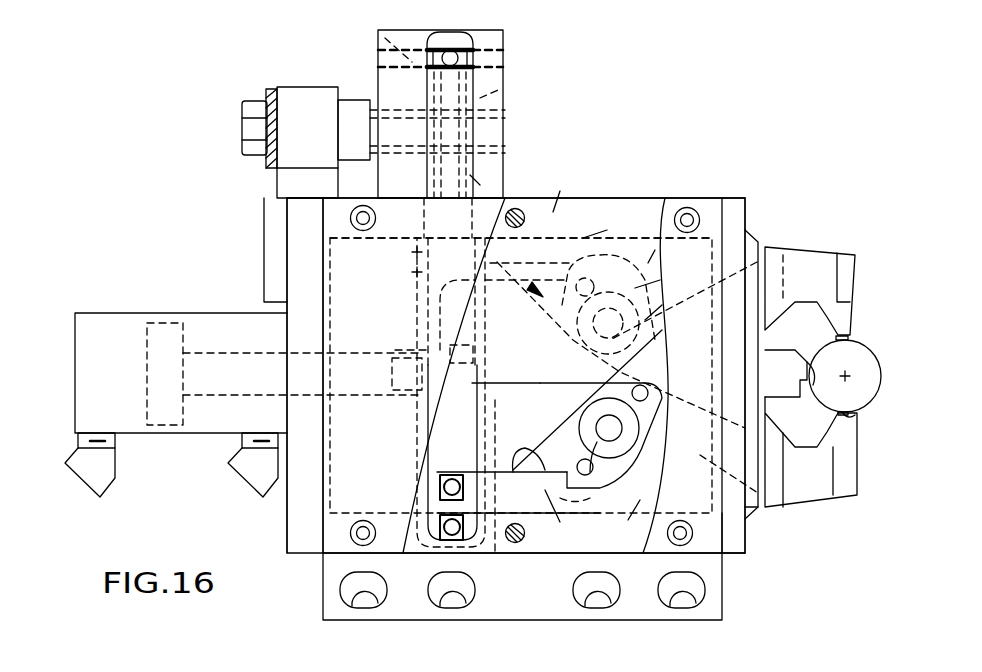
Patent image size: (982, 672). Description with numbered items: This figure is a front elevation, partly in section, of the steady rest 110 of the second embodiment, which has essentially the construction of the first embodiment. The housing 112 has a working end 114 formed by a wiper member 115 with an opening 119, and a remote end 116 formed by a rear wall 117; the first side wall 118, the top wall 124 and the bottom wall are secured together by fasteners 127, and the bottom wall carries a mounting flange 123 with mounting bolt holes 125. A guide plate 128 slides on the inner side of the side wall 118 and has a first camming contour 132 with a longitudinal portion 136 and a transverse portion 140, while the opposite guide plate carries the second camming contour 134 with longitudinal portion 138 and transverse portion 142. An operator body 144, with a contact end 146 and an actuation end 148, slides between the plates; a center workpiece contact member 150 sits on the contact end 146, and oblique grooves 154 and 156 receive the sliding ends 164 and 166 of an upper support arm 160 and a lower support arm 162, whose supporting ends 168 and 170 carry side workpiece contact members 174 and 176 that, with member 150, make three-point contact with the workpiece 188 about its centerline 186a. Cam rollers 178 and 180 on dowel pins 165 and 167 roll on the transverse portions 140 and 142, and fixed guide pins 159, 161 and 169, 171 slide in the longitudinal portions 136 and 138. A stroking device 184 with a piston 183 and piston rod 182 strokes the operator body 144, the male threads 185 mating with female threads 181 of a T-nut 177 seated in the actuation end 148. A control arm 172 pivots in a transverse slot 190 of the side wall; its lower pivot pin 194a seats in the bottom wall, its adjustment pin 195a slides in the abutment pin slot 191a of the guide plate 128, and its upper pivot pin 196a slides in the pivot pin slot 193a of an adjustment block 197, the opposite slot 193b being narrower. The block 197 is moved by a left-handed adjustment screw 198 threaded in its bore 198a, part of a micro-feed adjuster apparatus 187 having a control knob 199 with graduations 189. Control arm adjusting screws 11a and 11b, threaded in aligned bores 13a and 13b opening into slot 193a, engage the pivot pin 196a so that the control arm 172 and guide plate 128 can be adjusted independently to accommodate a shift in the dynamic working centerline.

The steady rest 110 is at (158, 197).
The control arm adjusting screw 11a is at (496, 31).
The control arm adjusting screw 11b is at (400, 30).
The first longitudinal threaded bore 13a is at (507, 62).
The second longitudinal threaded bore 13b is at (383, 65).
The housing 112 is at (637, 198).
The working end 114 is at (746, 198).
The wiper member 115 is at (745, 553).
The remote end 116 is at (287, 515).
The rear wall 117 is at (303, 523).
The first side wall 118 is at (722, 578).
The opening 119 is at (767, 517).
The mounting flange 123 is at (560, 580).
The top wall 124 is at (607, 198).
The mounting bolt holes 125 is at (382, 600).
The fastening bolts 127 is at (355, 210).
The guide plate 128 is at (618, 521).
The first camming contour 132 is at (567, 519).
The second camming contour 134 is at (535, 255).
The longitudinal portion 136 is at (510, 387).
The longitudinal portion 138 is at (560, 325).
The transverse portion 140 is at (650, 457).
The transverse portion 142 is at (674, 250).
The operator body 144 is at (522, 424).
The contact end 146 is at (759, 242).
The actuation end 148 is at (417, 252).
The center workpiece contact member 150 is at (818, 368).
The first groove 154 is at (497, 537).
The second groove 156 is at (620, 222).
The fixed guide pin 159 is at (628, 423).
The upper support arm 160 is at (822, 245).
The fixed guide pin 161 is at (648, 394).
The lower support arm 162 is at (823, 507).
The sliding end 164 is at (567, 492).
The dowel pin 165 is at (613, 428).
The sliding end 166 is at (553, 210).
The dowel pin 167 is at (675, 305).
The supporting end 168 is at (850, 308).
The fixed guide pin 169 is at (658, 365).
The supporting end 170 is at (847, 443).
The fixed guide pin 171 is at (668, 277).
The control arm 172 is at (470, 175).
The side workpiece contact member 174 is at (835, 333).
The side workpiece contact member 176 is at (865, 400).
The T-nut 177 is at (463, 410).
The first cam roller 178 is at (597, 442).
The second cam roller 180 is at (595, 335).
The female threads 181 is at (410, 353).
The piston rod 182 is at (226, 370).
The piston 183 is at (172, 338).
The stroking device 184 is at (116, 418).
The male threads 185 is at (398, 402).
The workpiece centerline 186a is at (840, 413).
The micro-feed adjuster apparatus 187 is at (268, 168).
The workpiece 188 is at (852, 362).
The graduations 189 is at (267, 93).
The transverse slot 190 is at (418, 295).
The abutment pin slot 191a is at (420, 498).
The pivot pin slot 193a is at (352, 107).
The pivot pin slot 193b is at (368, 162).
The lower pivot pin 194a is at (444, 529).
The adjustment pin 195a is at (440, 485).
The upper pivot pin 196a is at (462, 68).
The adjustment block 197 is at (382, 45).
The adjustment screw 198 is at (348, 133).
The threaded bore 198a is at (505, 128).
The control knob 199 is at (250, 118).